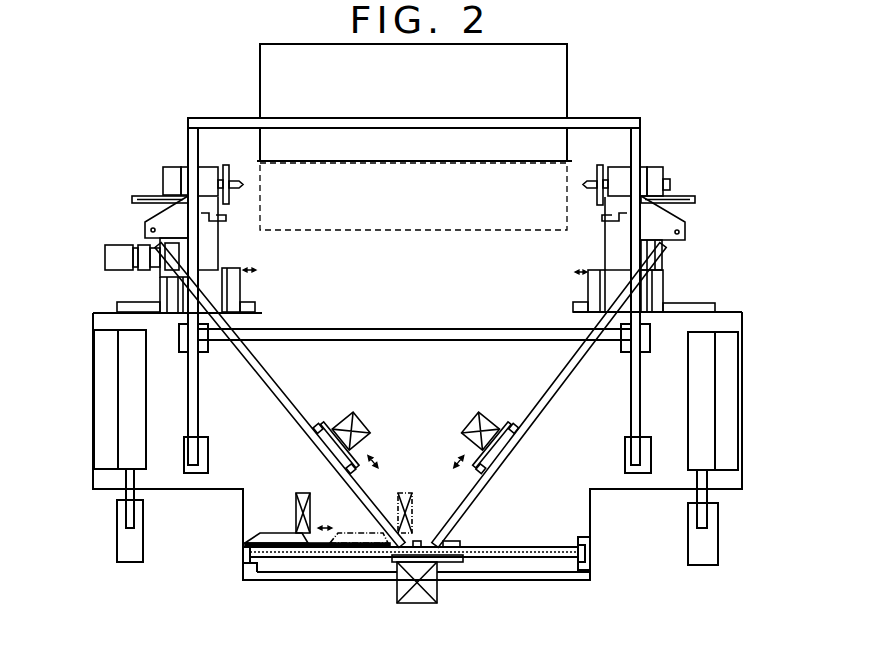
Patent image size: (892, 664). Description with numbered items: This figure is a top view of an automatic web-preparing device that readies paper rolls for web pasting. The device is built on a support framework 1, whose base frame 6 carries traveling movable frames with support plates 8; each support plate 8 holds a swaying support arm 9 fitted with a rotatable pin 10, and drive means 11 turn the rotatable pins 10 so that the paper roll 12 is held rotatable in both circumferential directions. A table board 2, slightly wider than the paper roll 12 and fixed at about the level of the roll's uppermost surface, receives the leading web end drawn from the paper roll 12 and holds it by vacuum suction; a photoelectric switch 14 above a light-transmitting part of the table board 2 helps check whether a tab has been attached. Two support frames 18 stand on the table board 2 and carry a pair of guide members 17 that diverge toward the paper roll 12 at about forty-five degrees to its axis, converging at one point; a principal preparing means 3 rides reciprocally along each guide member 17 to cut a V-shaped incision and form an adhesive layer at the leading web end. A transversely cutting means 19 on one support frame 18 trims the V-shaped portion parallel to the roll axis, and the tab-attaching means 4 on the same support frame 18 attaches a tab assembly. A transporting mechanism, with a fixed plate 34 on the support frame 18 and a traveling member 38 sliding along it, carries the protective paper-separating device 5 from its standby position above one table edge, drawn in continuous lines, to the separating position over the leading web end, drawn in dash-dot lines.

The support framework 1 is at (676, 270).
The table board 2 is at (340, 274).
The principal preparing means 3 is at (365, 427).
The tab-attaching means 4 is at (393, 591).
The tab surface protective paper-separating device 5 is at (302, 489).
The base frame 6 is at (117, 305).
The support plate 8 is at (232, 276).
The support arm 9 is at (205, 229).
The rotatable pin 10 is at (238, 182).
The drive means 11 is at (142, 262).
The paper roll 12 is at (541, 93).
The photoelectric switch 14 is at (419, 540).
The guide member 17 is at (283, 398).
The support frame 18 is at (641, 152).
The transversely cutting means 19 is at (458, 540).
The fixed plate 34 is at (316, 553).
The traveling member 38 is at (270, 540).